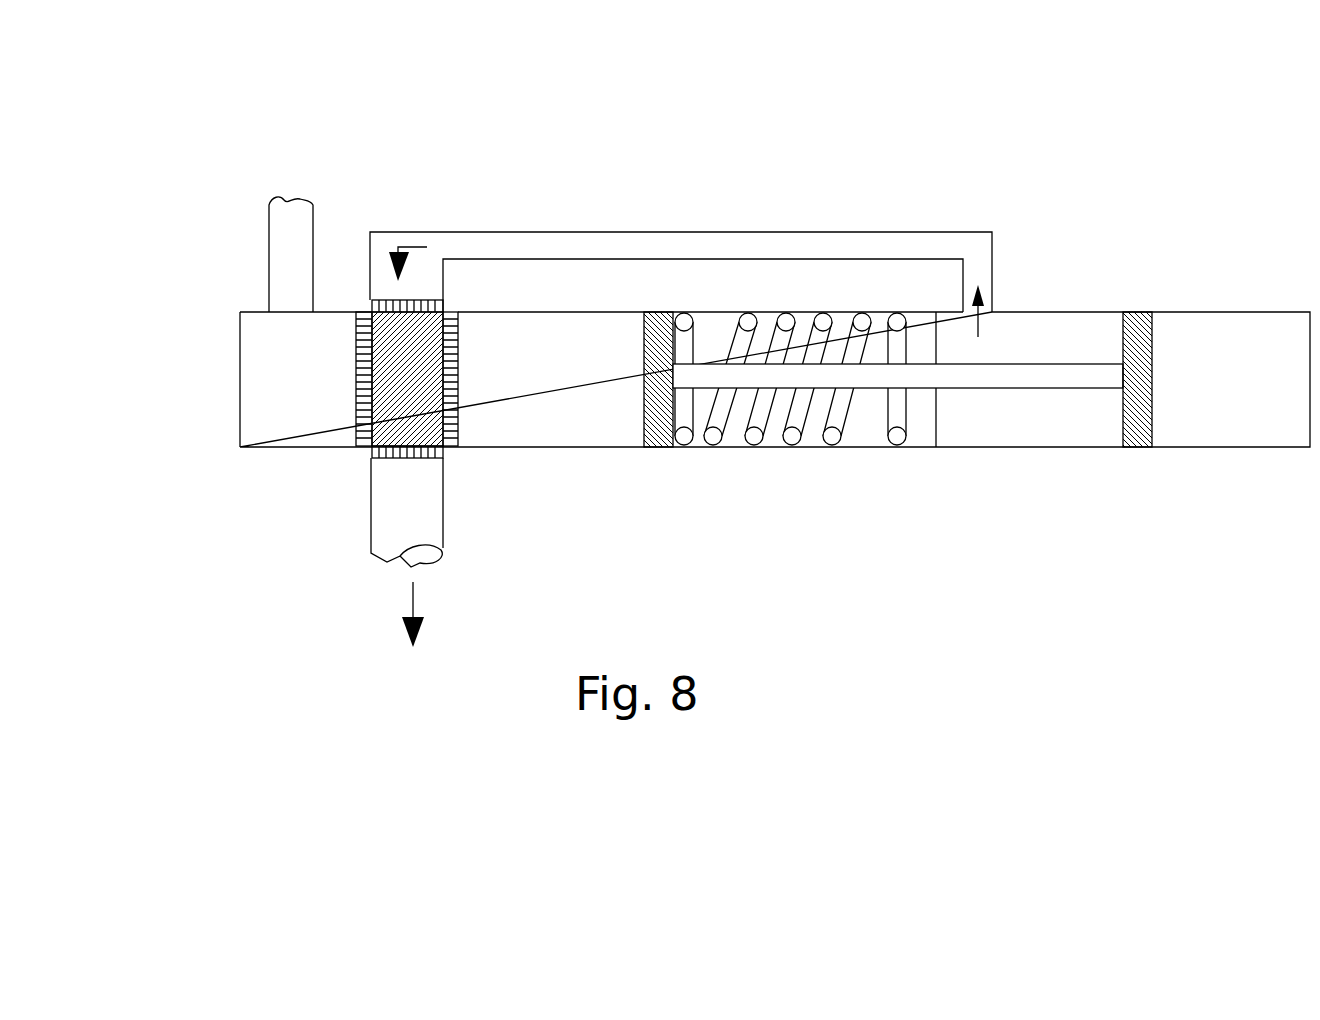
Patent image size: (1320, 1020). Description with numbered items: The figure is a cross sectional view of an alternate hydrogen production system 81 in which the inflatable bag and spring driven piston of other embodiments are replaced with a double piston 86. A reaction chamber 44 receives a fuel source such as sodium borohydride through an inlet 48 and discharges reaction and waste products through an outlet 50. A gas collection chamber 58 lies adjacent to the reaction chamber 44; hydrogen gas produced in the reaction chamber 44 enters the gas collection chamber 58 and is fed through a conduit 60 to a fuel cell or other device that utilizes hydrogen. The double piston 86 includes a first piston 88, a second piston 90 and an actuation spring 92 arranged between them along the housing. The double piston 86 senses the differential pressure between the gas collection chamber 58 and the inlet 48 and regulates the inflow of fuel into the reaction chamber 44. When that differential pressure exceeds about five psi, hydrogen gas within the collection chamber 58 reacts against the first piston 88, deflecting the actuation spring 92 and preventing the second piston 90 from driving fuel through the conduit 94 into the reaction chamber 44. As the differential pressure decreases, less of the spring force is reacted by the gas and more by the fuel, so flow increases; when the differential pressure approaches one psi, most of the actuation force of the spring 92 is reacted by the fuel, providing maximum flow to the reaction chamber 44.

The hydrogen production system 81 is at (227, 287).
The gas collection chamber 58 is at (307, 387).
The conduit 60 is at (300, 207).
The inlet 48 is at (400, 297).
The reaction chamber 44 is at (397, 393).
The outlet 50 is at (398, 556).
The conduit 94 is at (573, 243).
The first piston 88 is at (660, 310).
The actuation spring 92 is at (833, 310).
The double piston 86 is at (962, 377).
The second piston 90 is at (1138, 333).